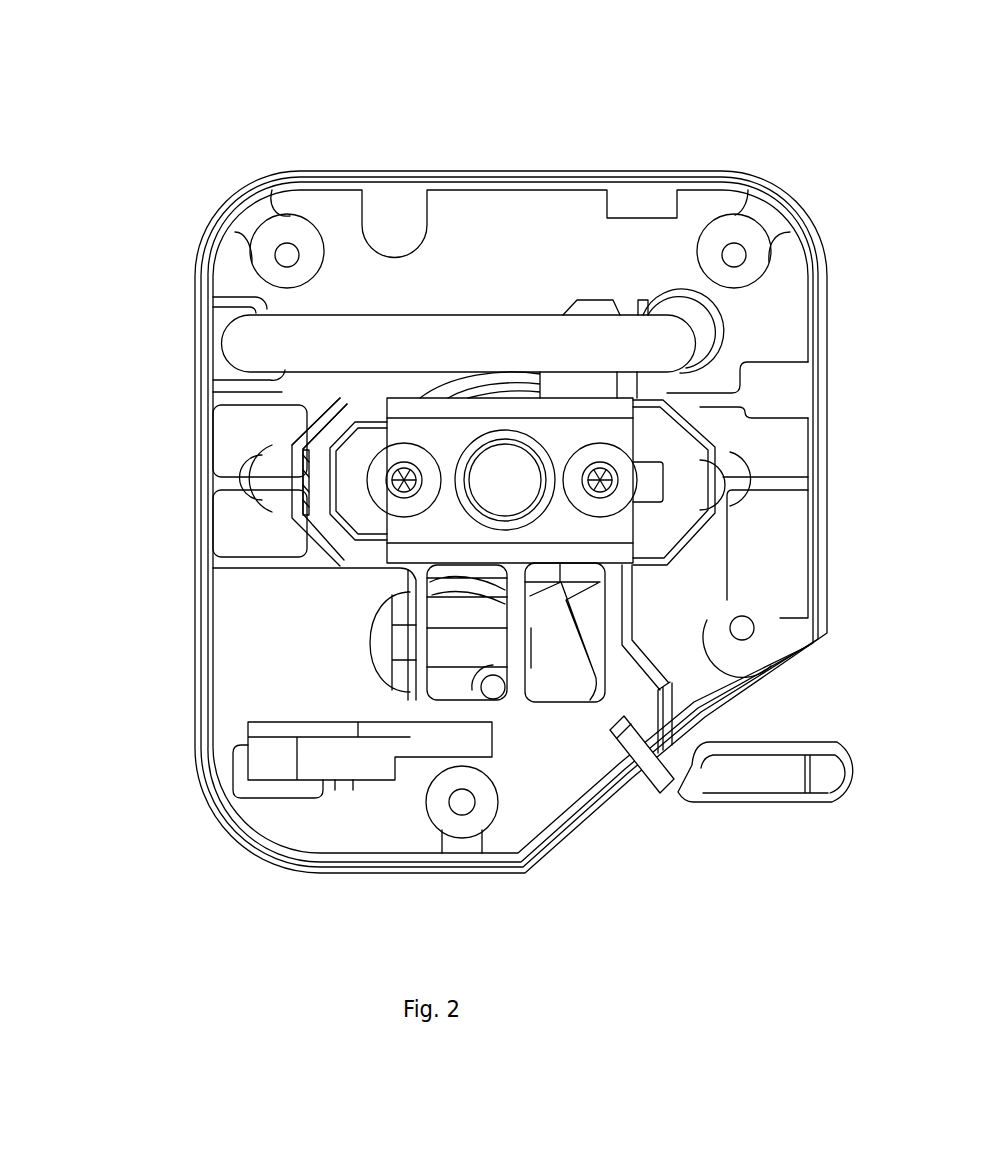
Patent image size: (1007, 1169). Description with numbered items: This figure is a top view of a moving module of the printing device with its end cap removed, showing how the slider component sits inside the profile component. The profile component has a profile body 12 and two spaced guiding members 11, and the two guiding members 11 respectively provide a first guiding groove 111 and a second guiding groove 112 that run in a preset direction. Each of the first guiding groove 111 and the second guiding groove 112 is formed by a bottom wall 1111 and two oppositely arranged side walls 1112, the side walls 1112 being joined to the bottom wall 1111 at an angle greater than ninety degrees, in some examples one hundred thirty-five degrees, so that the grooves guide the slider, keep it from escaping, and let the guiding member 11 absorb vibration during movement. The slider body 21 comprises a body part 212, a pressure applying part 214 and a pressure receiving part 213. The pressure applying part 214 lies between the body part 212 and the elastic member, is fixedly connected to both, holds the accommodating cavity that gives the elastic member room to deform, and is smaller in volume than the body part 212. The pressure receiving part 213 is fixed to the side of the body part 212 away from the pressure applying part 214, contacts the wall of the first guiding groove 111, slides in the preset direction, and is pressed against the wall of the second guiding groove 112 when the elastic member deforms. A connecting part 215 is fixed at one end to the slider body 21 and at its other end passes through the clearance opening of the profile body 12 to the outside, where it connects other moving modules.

The guiding member 11 is at (222, 562).
The profile body 12 is at (197, 628).
The first guiding groove 111 is at (197, 478).
The bottom wall 1111 is at (287, 468).
The side wall 1112 is at (280, 420).
The second guiding groove 112 is at (683, 570).
The slider body 21 is at (537, 404).
The body part 212 is at (500, 440).
The pressure receiving part 213 is at (323, 440).
The pressure applying part 214 is at (648, 430).
The connecting part 215 is at (777, 767).